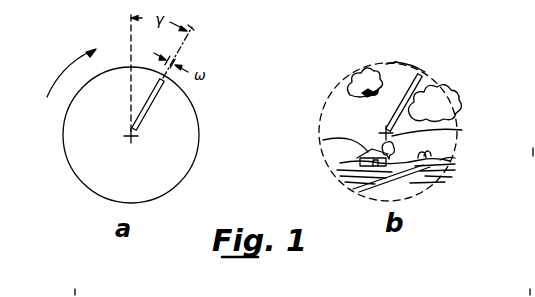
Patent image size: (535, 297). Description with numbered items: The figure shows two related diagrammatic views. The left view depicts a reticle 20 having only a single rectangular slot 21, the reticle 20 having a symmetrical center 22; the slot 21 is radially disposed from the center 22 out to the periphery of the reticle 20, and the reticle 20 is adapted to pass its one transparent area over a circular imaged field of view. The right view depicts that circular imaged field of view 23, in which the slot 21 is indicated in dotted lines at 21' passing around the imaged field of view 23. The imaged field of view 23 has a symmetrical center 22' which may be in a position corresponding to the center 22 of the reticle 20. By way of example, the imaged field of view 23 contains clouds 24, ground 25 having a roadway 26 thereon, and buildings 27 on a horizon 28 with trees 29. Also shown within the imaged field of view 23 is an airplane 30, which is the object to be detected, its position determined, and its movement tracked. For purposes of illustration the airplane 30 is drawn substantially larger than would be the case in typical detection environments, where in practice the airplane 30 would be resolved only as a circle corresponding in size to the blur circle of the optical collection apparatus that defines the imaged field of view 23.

The reticle 20 is at (83, 183).
The rectangular slot 21 is at (179, 105).
The symmetrical center 22 is at (145, 142).
The slot (in dotted lines) 21' is at (433, 94).
The symmetrical center 22' is at (442, 132).
The imaged field of view 23 is at (404, 64).
The clouds 24 is at (358, 73).
The ground 25 is at (427, 192).
The roadway 26 is at (350, 188).
The buildings 27 is at (323, 140).
The horizon 28 is at (350, 163).
The trees 29 is at (455, 158).
The airplane 30 is at (390, 64).